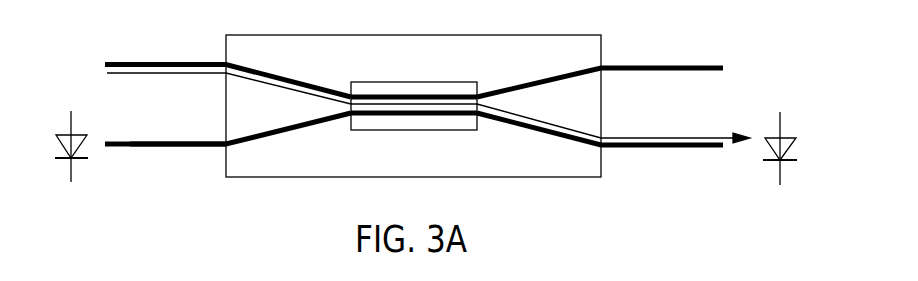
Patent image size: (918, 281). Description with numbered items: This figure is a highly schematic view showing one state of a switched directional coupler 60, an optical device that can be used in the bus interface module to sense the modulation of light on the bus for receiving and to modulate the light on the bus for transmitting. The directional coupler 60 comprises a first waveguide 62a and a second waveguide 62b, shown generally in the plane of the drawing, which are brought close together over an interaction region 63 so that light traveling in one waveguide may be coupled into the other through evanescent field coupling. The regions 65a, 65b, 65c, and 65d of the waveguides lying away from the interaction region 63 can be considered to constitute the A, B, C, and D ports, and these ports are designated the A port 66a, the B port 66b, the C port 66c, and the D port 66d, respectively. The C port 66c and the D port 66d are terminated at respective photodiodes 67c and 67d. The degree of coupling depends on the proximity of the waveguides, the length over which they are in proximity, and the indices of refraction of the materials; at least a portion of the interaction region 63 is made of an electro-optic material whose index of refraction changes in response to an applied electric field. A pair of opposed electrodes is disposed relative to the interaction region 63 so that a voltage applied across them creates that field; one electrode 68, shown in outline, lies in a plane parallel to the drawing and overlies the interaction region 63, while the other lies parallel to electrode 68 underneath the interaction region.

The switched directional coupler 60 is at (135, 189).
The first waveguide 62a is at (177, 62).
The second waveguide 62b is at (146, 149).
The interaction region 63 is at (413, 94).
The waveguide region A 65a is at (126, 62).
The waveguide region B 65b is at (639, 66).
The waveguide region C 65c is at (126, 142).
The waveguide region D 65d is at (639, 148).
The A port 66a is at (105, 64).
The B port 66b is at (725, 68).
The C port 66c is at (105, 143).
The D port 66d is at (725, 146).
The photodiode 67c is at (52, 148).
The photodiode 67d is at (784, 134).
The electrode 68 is at (430, 82).